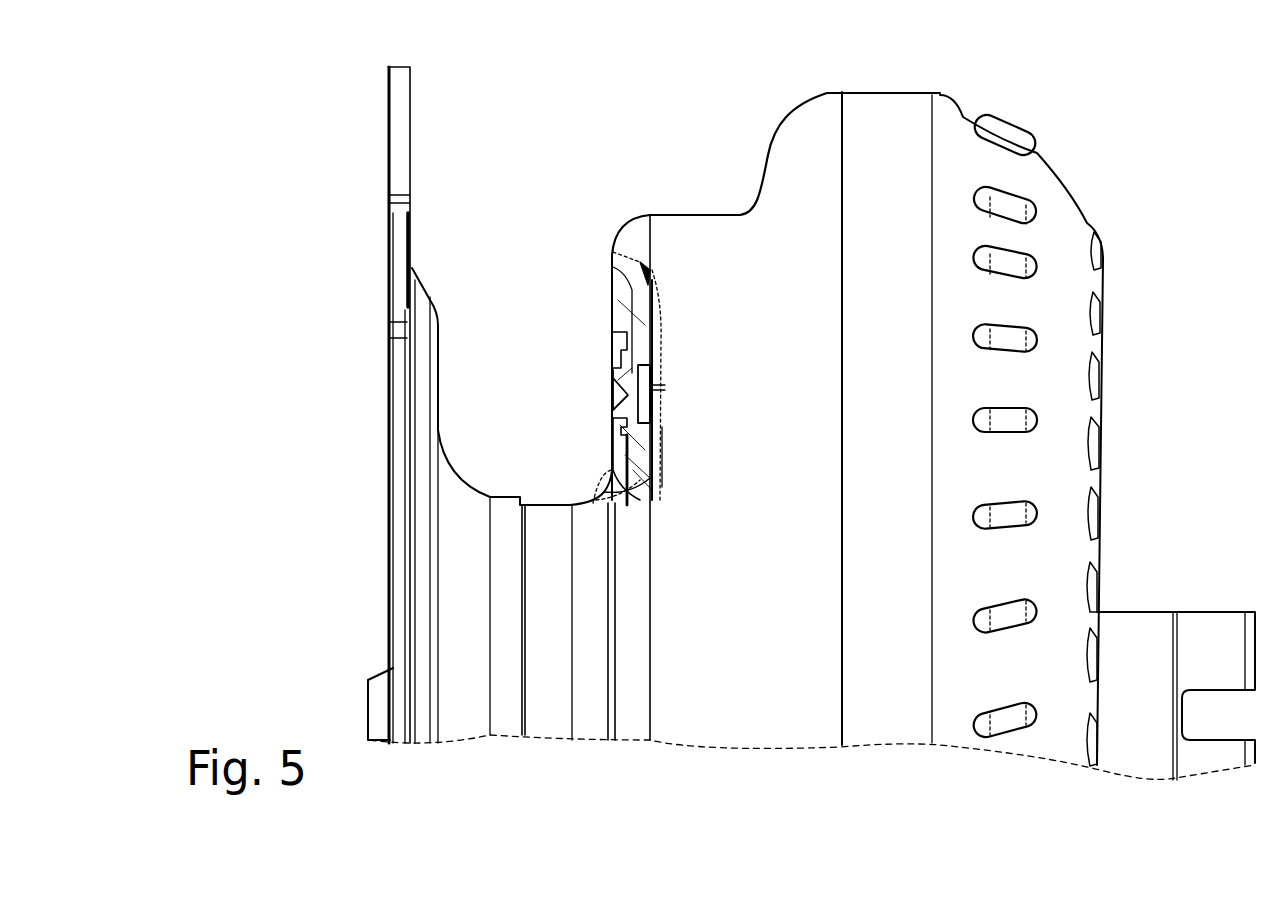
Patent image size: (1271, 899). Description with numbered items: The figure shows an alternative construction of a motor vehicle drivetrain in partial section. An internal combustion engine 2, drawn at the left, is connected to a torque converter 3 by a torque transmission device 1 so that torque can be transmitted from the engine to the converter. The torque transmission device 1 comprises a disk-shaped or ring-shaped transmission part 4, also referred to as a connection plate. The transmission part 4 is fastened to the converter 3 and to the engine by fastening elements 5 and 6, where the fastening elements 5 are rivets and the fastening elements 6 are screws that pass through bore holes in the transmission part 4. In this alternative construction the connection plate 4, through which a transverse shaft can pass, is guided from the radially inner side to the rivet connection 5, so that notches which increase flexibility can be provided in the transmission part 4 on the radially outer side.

The torque transmission device 1 is at (608, 208).
The internal combustion engine 2 is at (334, 206).
The torque converter 3 is at (878, 122).
The transmission part 4 is at (607, 443).
The fastening elements 5 is at (608, 378).
The fastening elements 6 is at (398, 120).